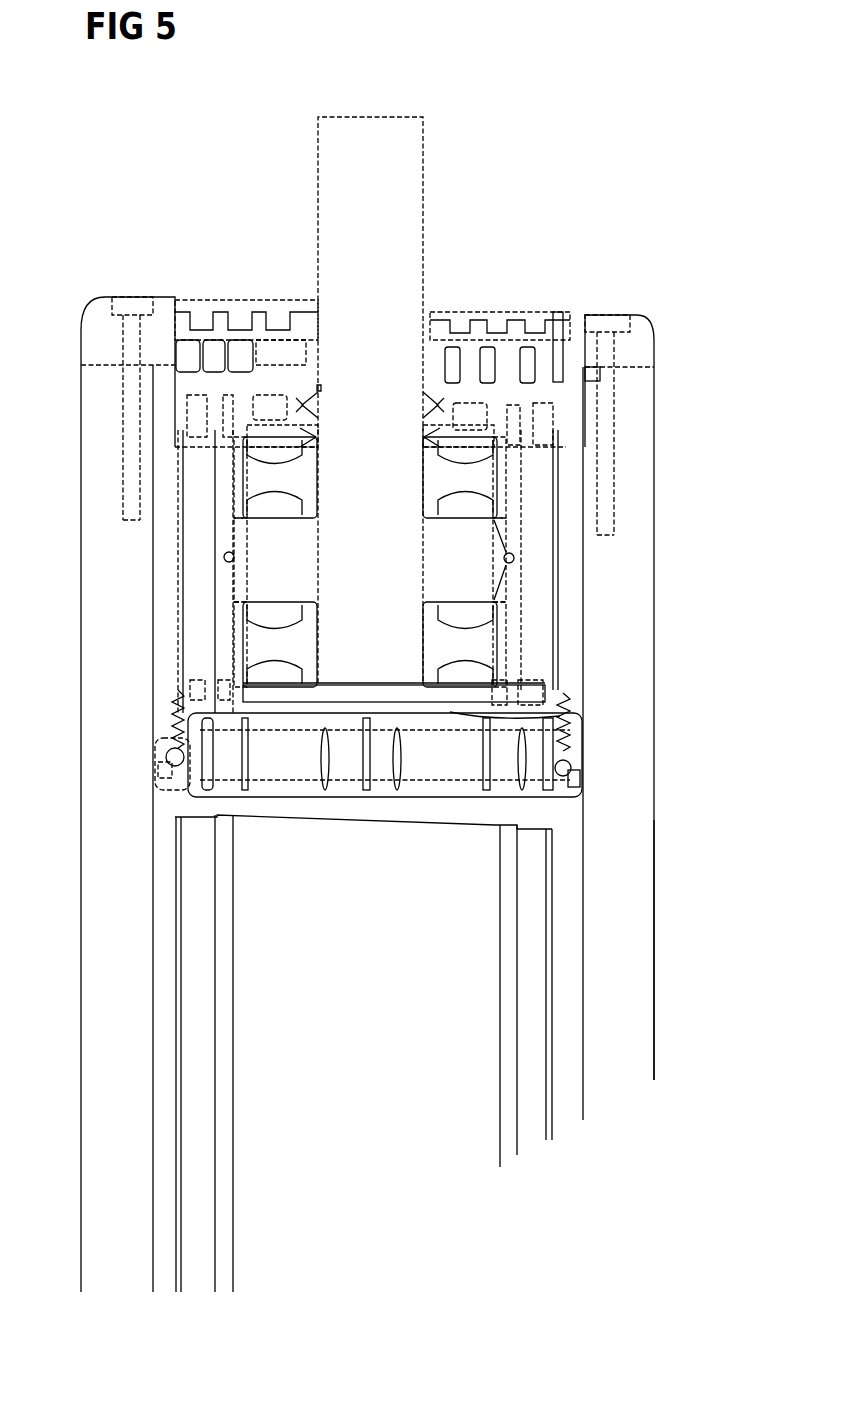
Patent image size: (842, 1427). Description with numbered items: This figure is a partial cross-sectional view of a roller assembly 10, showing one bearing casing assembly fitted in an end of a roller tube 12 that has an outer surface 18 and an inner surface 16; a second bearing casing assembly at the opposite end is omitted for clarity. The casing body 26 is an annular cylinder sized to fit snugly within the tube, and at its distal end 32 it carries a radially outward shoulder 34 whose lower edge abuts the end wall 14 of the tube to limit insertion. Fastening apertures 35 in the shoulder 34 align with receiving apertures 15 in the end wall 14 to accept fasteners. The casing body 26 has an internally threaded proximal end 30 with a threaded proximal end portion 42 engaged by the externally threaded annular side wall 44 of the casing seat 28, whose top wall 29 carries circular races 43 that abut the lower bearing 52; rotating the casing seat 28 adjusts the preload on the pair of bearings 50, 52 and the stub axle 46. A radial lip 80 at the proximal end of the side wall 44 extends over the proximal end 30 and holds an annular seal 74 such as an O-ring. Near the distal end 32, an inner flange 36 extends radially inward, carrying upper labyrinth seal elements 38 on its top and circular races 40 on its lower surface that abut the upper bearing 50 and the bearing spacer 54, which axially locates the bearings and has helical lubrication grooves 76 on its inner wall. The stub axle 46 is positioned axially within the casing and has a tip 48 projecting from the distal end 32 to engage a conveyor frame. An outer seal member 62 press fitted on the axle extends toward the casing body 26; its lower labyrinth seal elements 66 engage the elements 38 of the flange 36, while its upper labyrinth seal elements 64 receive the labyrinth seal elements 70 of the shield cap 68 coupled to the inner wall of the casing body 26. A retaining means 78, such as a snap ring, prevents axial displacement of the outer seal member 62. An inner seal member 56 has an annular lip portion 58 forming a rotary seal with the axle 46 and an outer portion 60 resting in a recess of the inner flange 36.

The roller assembly 10 is at (688, 153).
The roller tube 12 is at (640, 962).
The end wall 14 is at (633, 363).
The receiving apertures 15 is at (122, 508).
The inner surface 16 is at (560, 819).
The outer surface 18 is at (652, 900).
The casing body 26 is at (572, 473).
The casing seat 28 is at (210, 745).
The top wall 29 is at (450, 712).
The proximal end 30 is at (570, 760).
The distal end 32 is at (570, 357).
The shoulder 34 is at (103, 338).
The fastening apertures 35 is at (127, 300).
The inner flange 36 is at (528, 392).
The upper labyrinth seal elements 38 is at (557, 380).
The circular races 40 is at (528, 422).
The threaded proximal end portion 42 is at (563, 750).
The circular races 43 is at (240, 695).
The annular side wall 44 is at (175, 735).
The stub axle 46 is at (400, 612).
The tip 48 is at (375, 142).
The bearing 50 is at (263, 475).
The bearing 52 is at (255, 650).
The bearing spacer 54 is at (202, 505).
The inner seal member 56 is at (268, 441).
The annular lip portion 58 is at (285, 430).
The outer portion 60 is at (295, 412).
The outer seal member 62 is at (433, 345).
The labyrinth seal elements 64 is at (525, 325).
The labyrinth seal elements 66 is at (548, 360).
The shield cap 68 is at (283, 300).
The labyrinth seal elements 70 is at (236, 300).
The annular seal 74 is at (570, 768).
The helical lubrication grooves 76 is at (223, 552).
The retaining means 78 is at (313, 387).
The radial lip 80 is at (165, 770).